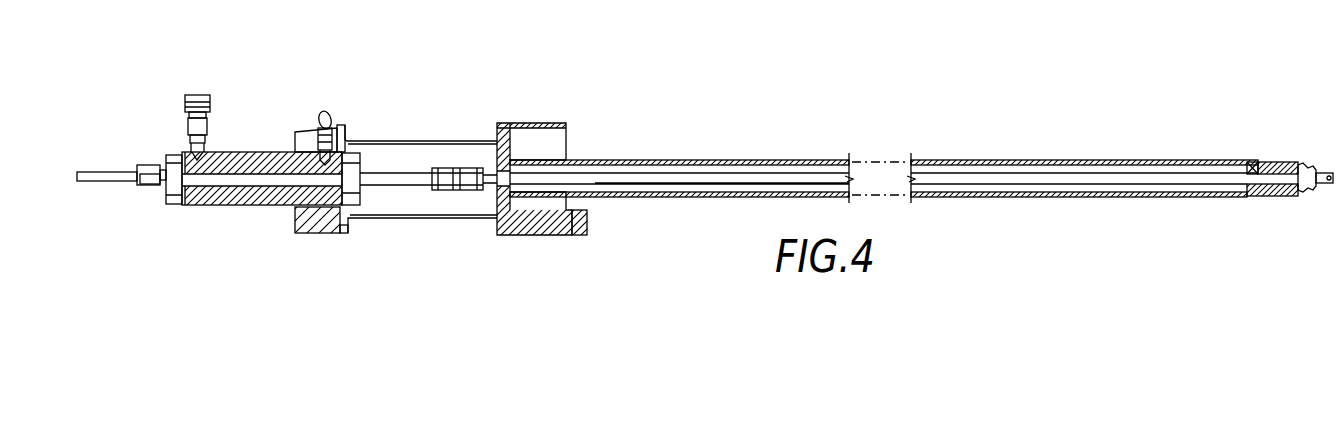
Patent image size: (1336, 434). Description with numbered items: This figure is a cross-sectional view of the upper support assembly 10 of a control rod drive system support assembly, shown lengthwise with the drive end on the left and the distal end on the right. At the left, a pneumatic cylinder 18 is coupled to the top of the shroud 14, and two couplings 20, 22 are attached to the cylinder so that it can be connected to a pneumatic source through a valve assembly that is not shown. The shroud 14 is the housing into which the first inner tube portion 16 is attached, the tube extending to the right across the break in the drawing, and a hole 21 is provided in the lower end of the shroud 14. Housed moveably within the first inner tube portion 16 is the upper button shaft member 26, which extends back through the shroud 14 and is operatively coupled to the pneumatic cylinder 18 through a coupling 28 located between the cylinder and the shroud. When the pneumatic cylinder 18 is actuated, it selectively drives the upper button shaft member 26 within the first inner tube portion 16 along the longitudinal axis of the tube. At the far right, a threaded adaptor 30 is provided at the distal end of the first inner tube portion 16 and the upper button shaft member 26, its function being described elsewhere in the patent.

The upper support assembly 10 is at (735, 112).
The shroud 14 is at (533, 235).
The first inner tube portion 16 is at (1034, 197).
The pneumatic cylinder 18 is at (233, 207).
The coupling 20 is at (186, 97).
The hole 21 is at (580, 237).
The coupling 22 is at (318, 113).
The upper button shaft member 26 is at (1018, 171).
The coupling 28 is at (453, 167).
The threaded adaptor 30 is at (1297, 162).